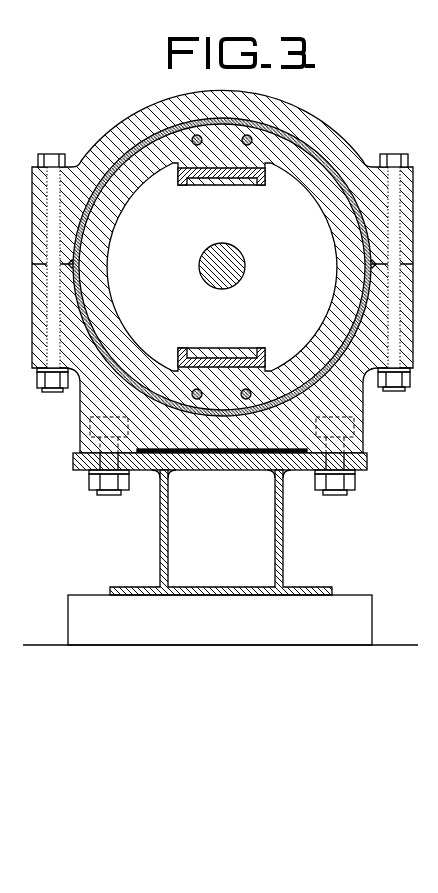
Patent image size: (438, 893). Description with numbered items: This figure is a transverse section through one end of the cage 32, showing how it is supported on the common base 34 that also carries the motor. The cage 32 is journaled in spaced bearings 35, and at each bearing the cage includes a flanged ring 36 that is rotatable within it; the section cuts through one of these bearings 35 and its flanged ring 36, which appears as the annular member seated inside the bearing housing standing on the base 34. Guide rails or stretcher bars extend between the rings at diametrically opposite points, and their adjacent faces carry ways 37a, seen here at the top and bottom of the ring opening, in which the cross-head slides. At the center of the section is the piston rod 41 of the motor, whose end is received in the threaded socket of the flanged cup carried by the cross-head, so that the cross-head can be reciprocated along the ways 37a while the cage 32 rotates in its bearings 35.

The cage 32 is at (108, 132).
The common base 34 is at (276, 561).
The bearings 35 is at (138, 124).
The flanged ring 36 is at (315, 173).
The ways 37a is at (219, 179).
The piston rod 41 is at (209, 264).